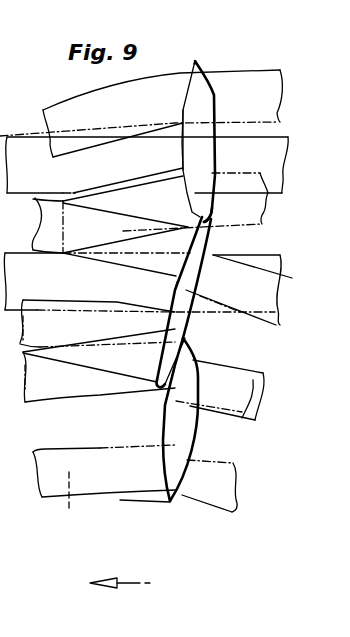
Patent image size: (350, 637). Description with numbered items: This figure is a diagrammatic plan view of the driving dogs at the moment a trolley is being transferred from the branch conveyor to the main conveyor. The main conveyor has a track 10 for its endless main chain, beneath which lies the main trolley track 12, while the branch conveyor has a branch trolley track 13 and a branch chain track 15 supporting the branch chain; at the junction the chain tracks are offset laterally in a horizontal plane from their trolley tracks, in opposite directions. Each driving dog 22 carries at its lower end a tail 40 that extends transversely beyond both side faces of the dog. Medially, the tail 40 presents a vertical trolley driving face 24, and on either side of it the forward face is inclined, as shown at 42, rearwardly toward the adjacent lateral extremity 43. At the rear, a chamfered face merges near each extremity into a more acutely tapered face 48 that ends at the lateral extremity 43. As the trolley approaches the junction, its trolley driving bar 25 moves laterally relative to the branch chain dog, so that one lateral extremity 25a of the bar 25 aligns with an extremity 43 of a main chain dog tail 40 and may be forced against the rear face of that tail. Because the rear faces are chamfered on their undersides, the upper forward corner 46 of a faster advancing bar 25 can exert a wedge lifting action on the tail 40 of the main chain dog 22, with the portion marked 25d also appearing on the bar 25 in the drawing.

The track 10 is at (233, 75).
The main trolley track 12 is at (282, 127).
The branch trolley track 13 is at (218, 262).
The branch chain track 15 is at (135, 483).
The driving dog 22 is at (203, 138).
The trolley driving face 24 is at (180, 145).
The trolley driving bar 25 is at (195, 303).
The lateral extremity 25a is at (210, 220).
The rounded blade end 25d is at (157, 382).
The tail 40 is at (184, 105).
The inclined face 42 is at (191, 83).
The lateral extremity 43 is at (195, 62).
The upper forward corner 46 is at (175, 284).
The more acutely tapered face 48 is at (192, 212).